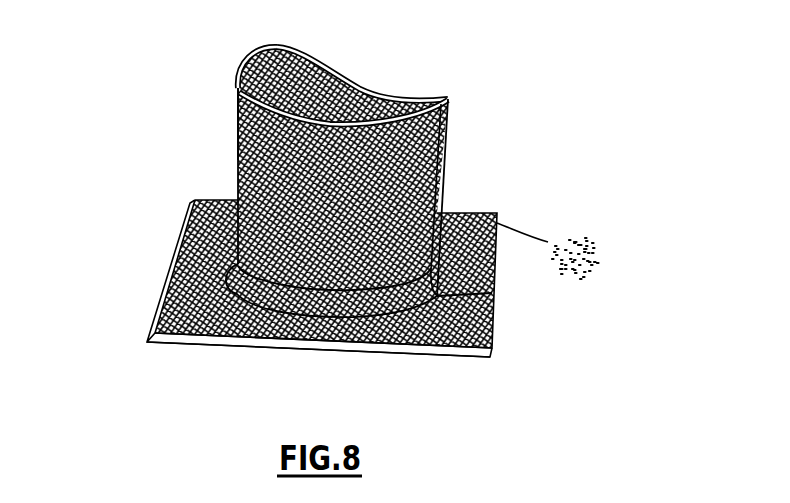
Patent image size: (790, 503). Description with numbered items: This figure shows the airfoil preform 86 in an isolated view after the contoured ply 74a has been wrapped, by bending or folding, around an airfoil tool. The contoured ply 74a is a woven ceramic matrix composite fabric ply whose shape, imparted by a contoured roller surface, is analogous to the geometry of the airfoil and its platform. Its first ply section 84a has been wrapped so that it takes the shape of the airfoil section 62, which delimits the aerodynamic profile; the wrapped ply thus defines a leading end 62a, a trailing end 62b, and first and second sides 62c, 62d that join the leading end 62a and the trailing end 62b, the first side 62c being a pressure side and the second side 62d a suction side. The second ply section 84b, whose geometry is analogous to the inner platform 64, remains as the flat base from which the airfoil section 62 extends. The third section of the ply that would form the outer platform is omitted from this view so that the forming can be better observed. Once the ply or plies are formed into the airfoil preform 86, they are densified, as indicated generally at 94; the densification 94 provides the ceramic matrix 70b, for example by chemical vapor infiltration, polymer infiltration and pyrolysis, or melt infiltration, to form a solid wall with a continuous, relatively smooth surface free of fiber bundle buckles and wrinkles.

The airfoil preform 86 is at (130, 257).
The airfoil section 62 is at (264, 173).
The leading end 62a is at (247, 63).
The trailing end 62b is at (443, 180).
The first side 62c is at (327, 63).
The second side 62d is at (347, 143).
The contoured ply 74a is at (257, 150).
The first ply section 84a is at (297, 260).
The second ply section 84b is at (204, 317).
The inner platform 64 is at (473, 355).
The densification 94 is at (531, 228).
The SiC matrix 70b is at (587, 263).